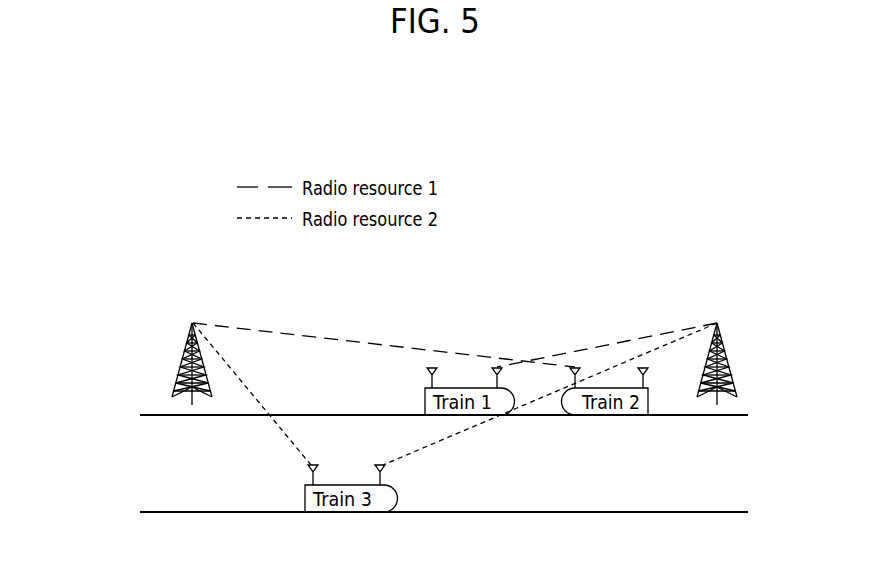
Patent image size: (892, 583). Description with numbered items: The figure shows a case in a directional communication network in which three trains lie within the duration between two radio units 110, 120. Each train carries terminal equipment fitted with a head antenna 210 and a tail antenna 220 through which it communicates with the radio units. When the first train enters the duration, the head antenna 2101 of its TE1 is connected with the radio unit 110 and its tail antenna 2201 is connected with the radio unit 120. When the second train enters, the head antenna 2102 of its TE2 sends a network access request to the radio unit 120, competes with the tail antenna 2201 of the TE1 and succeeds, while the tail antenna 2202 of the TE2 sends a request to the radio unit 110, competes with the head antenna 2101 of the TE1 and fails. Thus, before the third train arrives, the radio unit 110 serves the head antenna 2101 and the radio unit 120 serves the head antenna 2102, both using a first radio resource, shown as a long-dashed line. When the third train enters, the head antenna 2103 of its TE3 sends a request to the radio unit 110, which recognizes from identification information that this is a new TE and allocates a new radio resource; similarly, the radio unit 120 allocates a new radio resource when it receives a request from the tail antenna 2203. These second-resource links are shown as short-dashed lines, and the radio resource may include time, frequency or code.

The radio unit 110 is at (716, 322).
The radio unit 120 is at (192, 322).
The head antenna 210 is at (475, 391).
The tail antenna 220 is at (475, 391).
The head antenna of TE1 2101 is at (497, 367).
The head antenna of TE2 2102 is at (575, 367).
The head antenna of TE3 2103 is at (380, 464).
The tail antenna of TE1 2201 is at (432, 367).
The tail antenna of TE2 2202 is at (643, 367).
The tail antenna of TE3 2203 is at (313, 464).